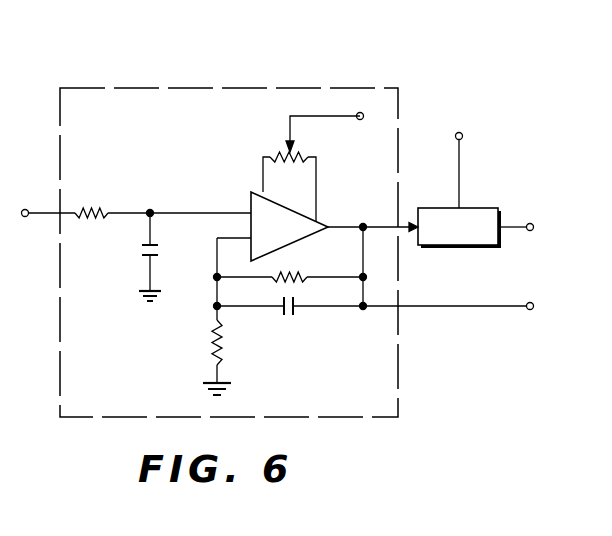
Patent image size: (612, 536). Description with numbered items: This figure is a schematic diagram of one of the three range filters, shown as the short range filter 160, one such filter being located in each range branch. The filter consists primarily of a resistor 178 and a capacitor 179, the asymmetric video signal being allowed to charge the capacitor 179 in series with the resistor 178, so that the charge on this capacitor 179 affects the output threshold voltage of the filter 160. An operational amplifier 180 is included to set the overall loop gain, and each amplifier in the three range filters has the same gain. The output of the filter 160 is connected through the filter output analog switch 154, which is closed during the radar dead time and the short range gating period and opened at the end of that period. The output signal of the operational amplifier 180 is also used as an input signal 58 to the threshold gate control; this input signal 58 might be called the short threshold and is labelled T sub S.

The short range filter 160 is at (288, 88).
The resistor 178 is at (101, 209).
The capacitor 179 is at (143, 247).
The operational amplifier 180 is at (250, 208).
The filter output analog switch 154 is at (476, 208).
The input signal 58 is at (435, 306).